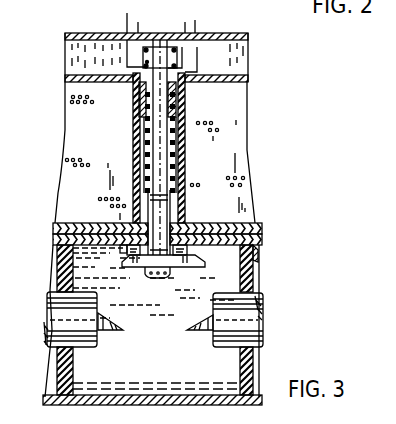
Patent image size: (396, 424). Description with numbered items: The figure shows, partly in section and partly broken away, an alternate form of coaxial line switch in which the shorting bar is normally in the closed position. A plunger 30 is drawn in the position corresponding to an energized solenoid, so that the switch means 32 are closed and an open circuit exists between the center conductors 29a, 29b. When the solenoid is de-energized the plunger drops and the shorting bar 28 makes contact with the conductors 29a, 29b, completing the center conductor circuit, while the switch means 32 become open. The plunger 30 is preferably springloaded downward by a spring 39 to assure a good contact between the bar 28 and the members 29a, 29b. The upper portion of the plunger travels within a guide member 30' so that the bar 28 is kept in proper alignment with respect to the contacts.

The switch means 32 is at (146, 62).
The guide member 30' is at (196, 148).
The spring 39 is at (141, 136).
The plunger 30 is at (184, 147).
The shorting bar 28 is at (184, 268).
The center conductor 29a is at (120, 331).
The center conductor 29b is at (198, 331).